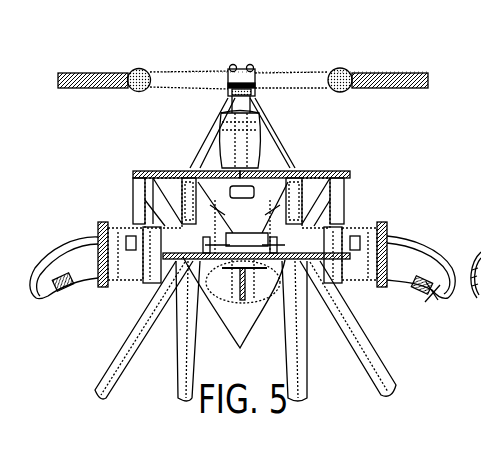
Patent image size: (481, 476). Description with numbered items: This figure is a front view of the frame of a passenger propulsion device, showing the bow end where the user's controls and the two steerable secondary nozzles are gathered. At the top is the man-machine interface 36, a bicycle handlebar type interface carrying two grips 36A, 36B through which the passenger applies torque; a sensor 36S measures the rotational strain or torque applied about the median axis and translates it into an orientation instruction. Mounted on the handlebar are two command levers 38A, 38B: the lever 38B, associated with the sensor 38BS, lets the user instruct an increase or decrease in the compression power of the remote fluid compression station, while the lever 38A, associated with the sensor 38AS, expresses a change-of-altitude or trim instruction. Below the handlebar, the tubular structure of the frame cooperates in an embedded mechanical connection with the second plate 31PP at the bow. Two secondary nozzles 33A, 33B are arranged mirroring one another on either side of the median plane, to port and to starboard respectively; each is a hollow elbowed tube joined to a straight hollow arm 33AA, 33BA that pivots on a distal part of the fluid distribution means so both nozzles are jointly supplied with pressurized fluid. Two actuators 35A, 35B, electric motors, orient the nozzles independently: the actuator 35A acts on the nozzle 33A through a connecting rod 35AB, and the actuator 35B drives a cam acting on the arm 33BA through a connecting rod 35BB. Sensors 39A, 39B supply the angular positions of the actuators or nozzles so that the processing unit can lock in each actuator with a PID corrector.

The command lever 38B is at (128, 44).
The sensor 38BS is at (128, 74).
The man-machine interface 36 is at (277, 80).
The command lever 38A is at (393, 44).
The sensor 38AS is at (355, 74).
The grip 36B is at (95, 90).
The grip 36A is at (376, 92).
The sensor 36S is at (268, 152).
The actuator 35A is at (127, 176).
The actuator 35B is at (350, 195).
The connecting rod 35BB is at (133, 198).
The connecting rod 35AB is at (353, 210).
The sensor 39B is at (100, 226).
The sensor 39A is at (352, 232).
The secondary nozzle 33B is at (40, 298).
The arm 33BA is at (137, 262).
The secondary nozzle 33A is at (437, 300).
The arm 33AA is at (430, 305).
The second plate 31PP is at (234, 315).